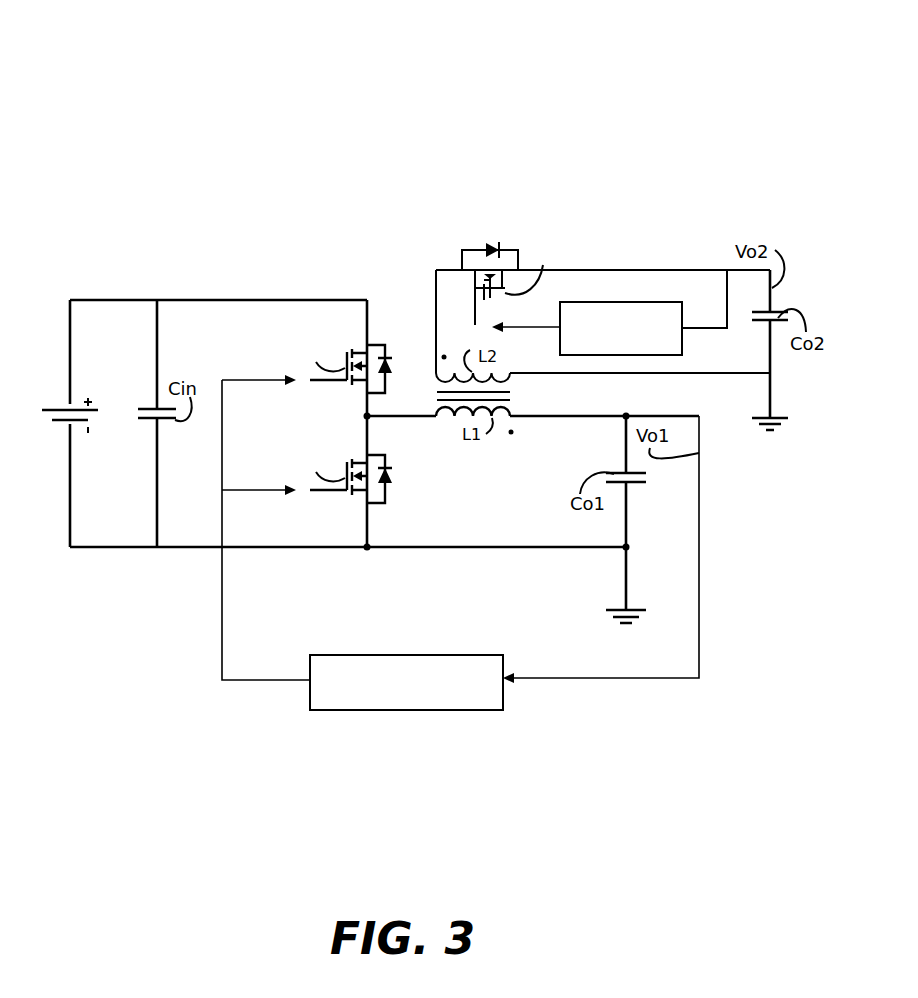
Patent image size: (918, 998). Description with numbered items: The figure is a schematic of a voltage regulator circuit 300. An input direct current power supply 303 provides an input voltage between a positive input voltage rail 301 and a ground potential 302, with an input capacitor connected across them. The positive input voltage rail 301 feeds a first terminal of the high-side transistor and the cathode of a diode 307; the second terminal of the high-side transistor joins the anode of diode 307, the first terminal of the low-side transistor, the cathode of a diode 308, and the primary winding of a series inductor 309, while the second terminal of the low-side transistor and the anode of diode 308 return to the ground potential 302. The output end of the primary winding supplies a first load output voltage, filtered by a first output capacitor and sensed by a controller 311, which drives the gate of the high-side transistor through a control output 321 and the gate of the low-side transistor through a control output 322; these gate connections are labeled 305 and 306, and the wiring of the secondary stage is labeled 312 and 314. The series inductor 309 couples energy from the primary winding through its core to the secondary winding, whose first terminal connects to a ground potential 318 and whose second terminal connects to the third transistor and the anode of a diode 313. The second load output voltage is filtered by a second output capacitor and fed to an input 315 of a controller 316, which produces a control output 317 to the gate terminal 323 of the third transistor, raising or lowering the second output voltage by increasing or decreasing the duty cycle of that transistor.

The voltage regulator circuit 300 is at (790, 70).
The positive input voltage rail 301 is at (248, 300).
The ground potential 302 is at (282, 550).
The input direct current power supply 303 is at (62, 410).
The first switch Q1 gate 305 is at (326, 382).
The second switch Q2 gate 306 is at (326, 492).
The diode 307 is at (390, 366).
The diode 308 is at (395, 474).
The series inductor 309 is at (500, 394).
The controller 311 is at (360, 655).
The secondary winding connection 312 is at (443, 270).
The diode 313 is at (487, 250).
The second output line 314 is at (580, 270).
The input of controller 315 is at (708, 328).
The controller 316 is at (627, 302).
The control output 317 is at (536, 330).
The ground potential 318 is at (770, 399).
The control output 321 is at (245, 380).
The control output 322 is at (239, 490).
The gate terminal 323 is at (474, 313).